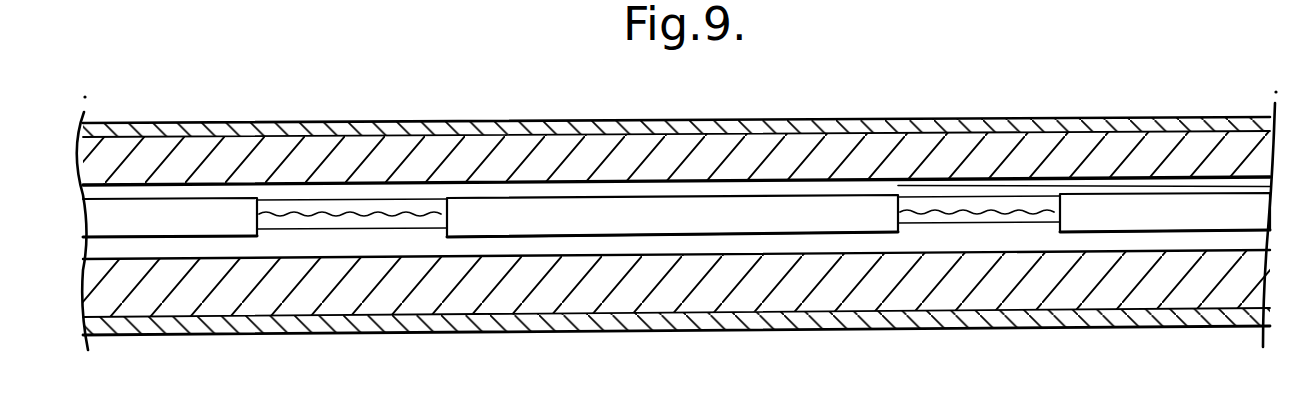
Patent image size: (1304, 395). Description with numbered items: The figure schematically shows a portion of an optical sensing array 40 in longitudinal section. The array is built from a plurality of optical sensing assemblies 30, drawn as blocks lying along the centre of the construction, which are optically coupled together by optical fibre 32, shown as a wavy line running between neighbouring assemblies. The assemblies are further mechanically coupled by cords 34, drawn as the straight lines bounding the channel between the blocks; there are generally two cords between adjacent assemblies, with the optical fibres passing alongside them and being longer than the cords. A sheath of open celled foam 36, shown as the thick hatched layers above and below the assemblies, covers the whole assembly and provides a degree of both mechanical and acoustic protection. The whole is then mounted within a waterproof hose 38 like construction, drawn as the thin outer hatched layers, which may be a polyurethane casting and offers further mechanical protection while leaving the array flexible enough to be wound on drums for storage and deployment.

The optical sensing assembly 30 is at (168, 218).
The optical fibre 32 is at (263, 213).
The cord 34 is at (400, 198).
The sheath of open celled foam 36 is at (1122, 150).
The waterproof hose 38 is at (918, 117).
The optical sensing array 40 is at (790, 102).